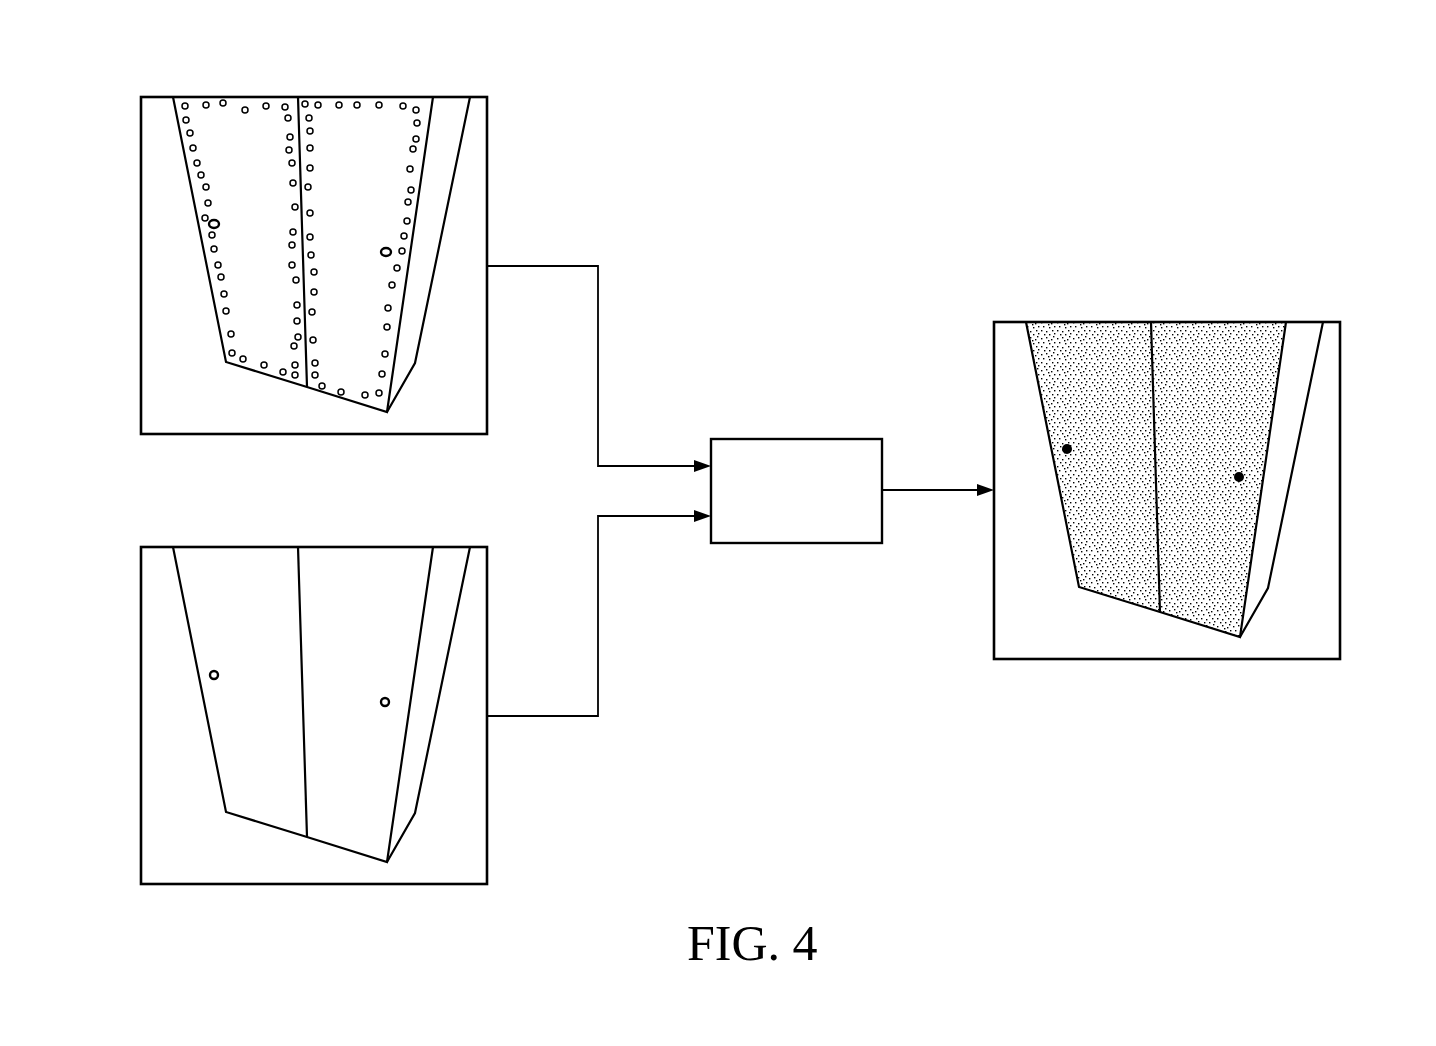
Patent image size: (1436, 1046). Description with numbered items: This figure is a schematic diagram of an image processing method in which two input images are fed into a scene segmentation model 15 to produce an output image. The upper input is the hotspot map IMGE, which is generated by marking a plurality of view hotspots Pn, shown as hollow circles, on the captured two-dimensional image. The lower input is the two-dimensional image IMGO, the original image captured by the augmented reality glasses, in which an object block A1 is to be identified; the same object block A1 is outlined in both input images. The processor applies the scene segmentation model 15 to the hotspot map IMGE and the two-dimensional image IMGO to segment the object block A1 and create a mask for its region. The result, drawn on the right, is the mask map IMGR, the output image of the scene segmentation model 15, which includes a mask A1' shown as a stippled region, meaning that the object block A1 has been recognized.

The view hotspot Pn is at (190, 106).
The hotspot map IMGE is at (357, 236).
The object block A1 is at (363, 479).
The two-dimensional image IMGO is at (487, 547).
The scene segmentation model 15 is at (842, 439).
The mask map IMGR is at (1303, 322).
The mask A1' is at (1219, 479).